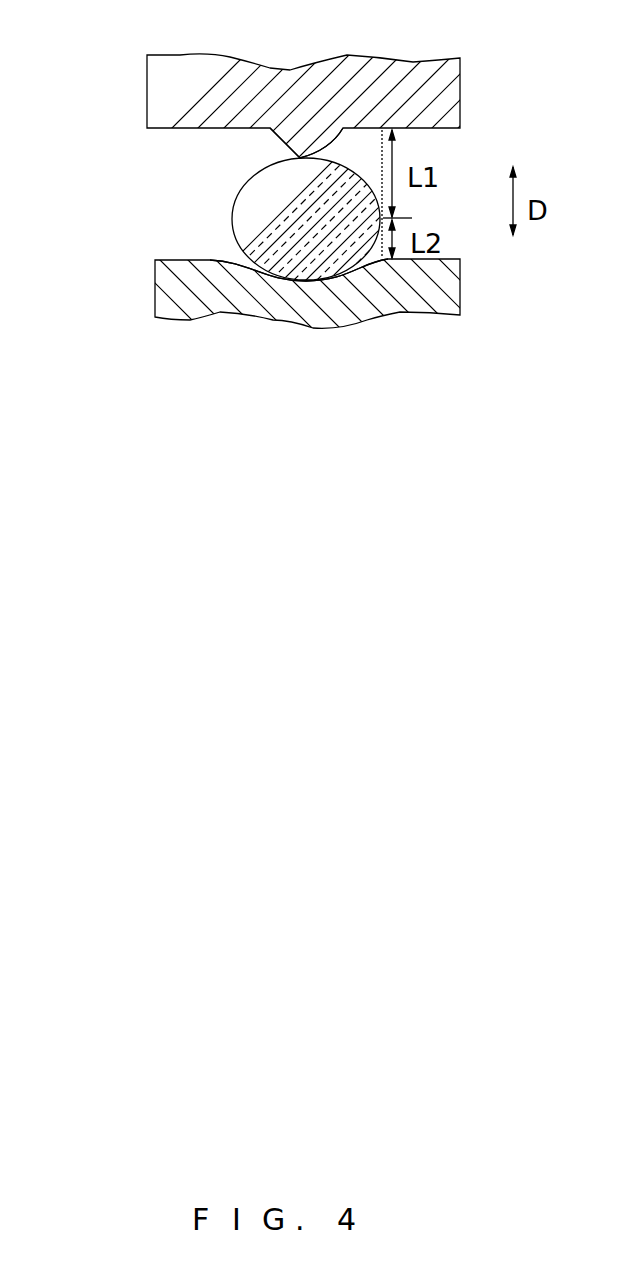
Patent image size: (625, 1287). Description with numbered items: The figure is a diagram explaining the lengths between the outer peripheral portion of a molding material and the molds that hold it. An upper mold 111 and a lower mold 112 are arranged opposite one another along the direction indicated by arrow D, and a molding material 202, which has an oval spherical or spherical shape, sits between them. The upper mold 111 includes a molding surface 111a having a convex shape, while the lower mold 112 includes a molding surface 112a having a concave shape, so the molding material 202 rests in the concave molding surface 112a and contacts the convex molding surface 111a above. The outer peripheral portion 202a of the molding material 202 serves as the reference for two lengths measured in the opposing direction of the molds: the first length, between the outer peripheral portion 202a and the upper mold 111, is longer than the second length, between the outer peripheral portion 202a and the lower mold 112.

The upper mold 111 is at (147, 86).
The molding surface 111a is at (344, 130).
The molding material 202 is at (234, 213).
The outer peripheral portion 202a is at (384, 217).
The lower mold 112 is at (155, 295).
The molding surface 112a is at (370, 272).